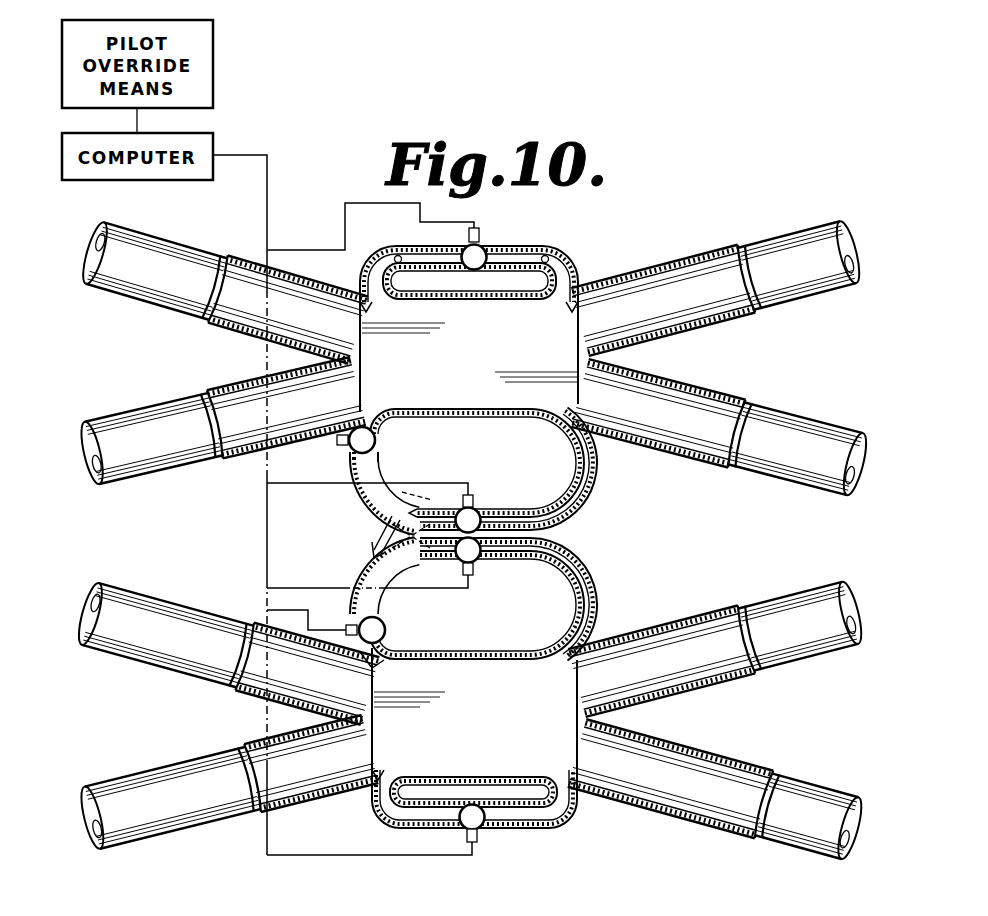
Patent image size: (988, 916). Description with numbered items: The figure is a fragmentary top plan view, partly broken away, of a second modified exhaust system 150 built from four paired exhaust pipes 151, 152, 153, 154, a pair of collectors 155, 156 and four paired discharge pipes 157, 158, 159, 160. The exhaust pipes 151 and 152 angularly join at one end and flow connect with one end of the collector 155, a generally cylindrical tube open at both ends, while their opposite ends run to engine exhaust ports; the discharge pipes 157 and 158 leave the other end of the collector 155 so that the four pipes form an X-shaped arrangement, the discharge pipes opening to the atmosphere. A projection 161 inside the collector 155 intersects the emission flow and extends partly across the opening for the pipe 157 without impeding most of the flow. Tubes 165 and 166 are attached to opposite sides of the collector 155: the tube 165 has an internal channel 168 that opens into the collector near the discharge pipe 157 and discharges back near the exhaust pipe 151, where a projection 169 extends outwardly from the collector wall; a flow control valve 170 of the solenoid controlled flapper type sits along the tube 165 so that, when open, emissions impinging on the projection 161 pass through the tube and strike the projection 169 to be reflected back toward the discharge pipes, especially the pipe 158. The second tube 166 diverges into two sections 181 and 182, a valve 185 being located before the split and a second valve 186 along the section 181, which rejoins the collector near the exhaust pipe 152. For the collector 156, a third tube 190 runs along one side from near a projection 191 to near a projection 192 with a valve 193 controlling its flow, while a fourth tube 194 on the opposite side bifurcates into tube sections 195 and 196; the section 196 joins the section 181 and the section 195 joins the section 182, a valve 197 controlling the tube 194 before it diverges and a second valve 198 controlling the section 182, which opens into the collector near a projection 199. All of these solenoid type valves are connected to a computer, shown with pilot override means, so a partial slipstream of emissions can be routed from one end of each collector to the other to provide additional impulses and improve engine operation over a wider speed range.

The exhaust system 150 is at (295, 236).
The exhaust pipe 151 is at (182, 243).
The exhaust pipe 152 is at (158, 405).
The exhaust pipe 153 is at (168, 592).
The exhaust pipe 154 is at (170, 758).
The collector 155 is at (503, 300).
The collector 156 is at (461, 776).
The discharge pipe 157 is at (725, 250).
The discharge pipe 158 is at (780, 403).
The discharge pipe 159 is at (710, 616).
The discharge pipe 160 is at (715, 745).
The projection 161 is at (572, 306).
The tube 165 is at (548, 261).
The tube 166 is at (597, 485).
The internal channel 168 is at (398, 254).
The projection 169 is at (373, 306).
The flow control valve 170 is at (484, 248).
The tube section 181 is at (347, 464).
The tube section 182 is at (388, 638).
The valve 185 is at (478, 507).
The valve 186 is at (378, 438).
The tube 190 is at (385, 823).
The projection 191 is at (567, 766).
The projection 192 is at (381, 766).
The valve 193 is at (486, 826).
The tube 194 is at (590, 569).
The tube section 195 is at (350, 579).
The tube section 196 is at (352, 516).
The valve 197 is at (484, 565).
The valve 198 is at (388, 622).
The projection 199 is at (383, 664).